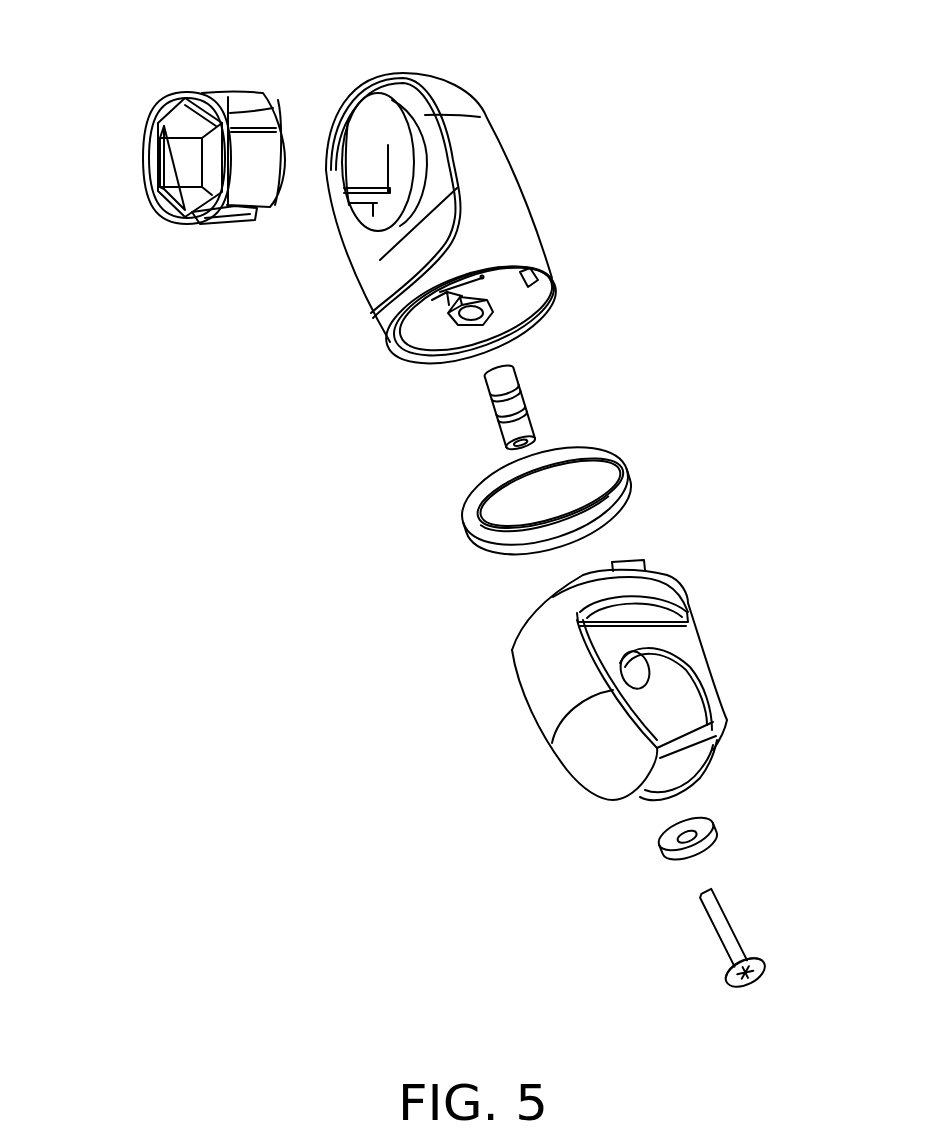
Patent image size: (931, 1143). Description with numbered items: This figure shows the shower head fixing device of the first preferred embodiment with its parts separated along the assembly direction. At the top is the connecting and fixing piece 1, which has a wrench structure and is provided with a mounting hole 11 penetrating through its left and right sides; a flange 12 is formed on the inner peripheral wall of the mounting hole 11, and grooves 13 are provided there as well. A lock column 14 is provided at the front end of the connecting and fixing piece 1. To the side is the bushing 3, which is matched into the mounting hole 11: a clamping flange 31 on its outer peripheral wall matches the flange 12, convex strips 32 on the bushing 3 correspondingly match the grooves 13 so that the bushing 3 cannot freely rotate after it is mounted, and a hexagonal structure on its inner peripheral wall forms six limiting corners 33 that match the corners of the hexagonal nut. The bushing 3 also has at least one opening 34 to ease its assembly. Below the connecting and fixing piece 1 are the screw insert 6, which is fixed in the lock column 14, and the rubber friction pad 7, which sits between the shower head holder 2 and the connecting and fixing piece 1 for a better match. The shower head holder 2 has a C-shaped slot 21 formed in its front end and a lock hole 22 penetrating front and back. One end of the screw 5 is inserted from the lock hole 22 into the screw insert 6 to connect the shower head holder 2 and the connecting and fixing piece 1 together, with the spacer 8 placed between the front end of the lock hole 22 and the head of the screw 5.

The connecting and fixing piece 1 is at (422, 192).
The mounting hole 11 is at (407, 132).
The flange 12 is at (384, 115).
The grooves 13 is at (368, 205).
The lock column 14 is at (452, 298).
The shower head holder 2 is at (615, 680).
The C-shaped slot 21 is at (678, 698).
The lock hole 22 is at (636, 672).
The bushing 3 is at (188, 146).
The clamping flange 31 is at (238, 107).
The convex strips 32 is at (252, 118).
The limiting corner 33 is at (185, 118).
The opening 34 is at (240, 209).
The screw 5 is at (726, 925).
The screw insert 6 is at (512, 410).
The rubber friction pad 7 is at (478, 510).
The spacer 8 is at (708, 832).